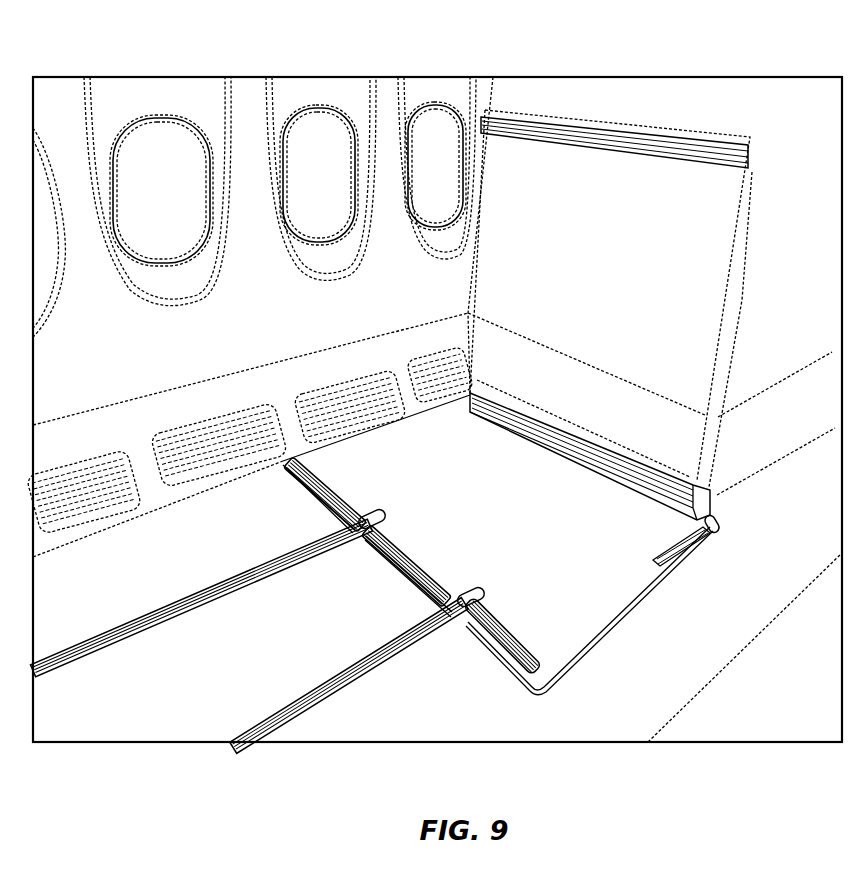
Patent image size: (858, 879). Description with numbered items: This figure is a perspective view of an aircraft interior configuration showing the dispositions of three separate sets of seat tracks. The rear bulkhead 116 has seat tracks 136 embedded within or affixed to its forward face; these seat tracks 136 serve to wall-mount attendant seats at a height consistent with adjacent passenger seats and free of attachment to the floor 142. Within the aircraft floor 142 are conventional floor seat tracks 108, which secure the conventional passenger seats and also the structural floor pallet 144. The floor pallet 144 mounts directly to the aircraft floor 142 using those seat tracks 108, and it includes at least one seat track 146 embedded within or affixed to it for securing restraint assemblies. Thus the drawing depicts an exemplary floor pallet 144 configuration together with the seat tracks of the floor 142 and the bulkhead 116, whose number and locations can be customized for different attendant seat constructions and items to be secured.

The floor seat tracks 108 is at (328, 690).
The rear bulkhead 116 is at (605, 95).
The seat tracks 136 is at (687, 138).
The floor 142 is at (148, 670).
The structural floor pallet 144 is at (622, 592).
The seat track 146 is at (480, 627).